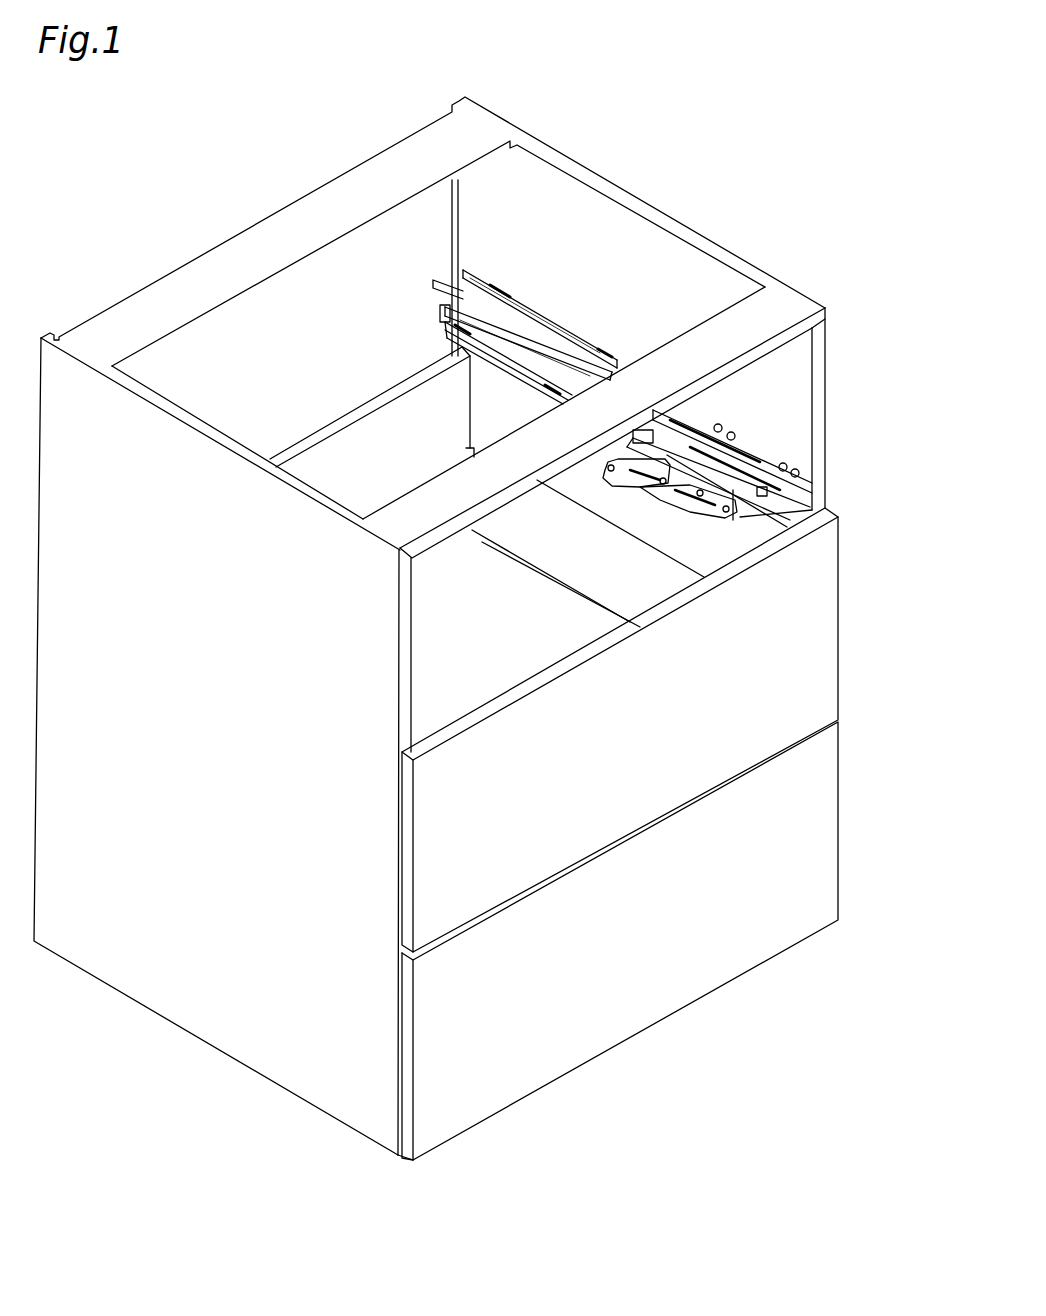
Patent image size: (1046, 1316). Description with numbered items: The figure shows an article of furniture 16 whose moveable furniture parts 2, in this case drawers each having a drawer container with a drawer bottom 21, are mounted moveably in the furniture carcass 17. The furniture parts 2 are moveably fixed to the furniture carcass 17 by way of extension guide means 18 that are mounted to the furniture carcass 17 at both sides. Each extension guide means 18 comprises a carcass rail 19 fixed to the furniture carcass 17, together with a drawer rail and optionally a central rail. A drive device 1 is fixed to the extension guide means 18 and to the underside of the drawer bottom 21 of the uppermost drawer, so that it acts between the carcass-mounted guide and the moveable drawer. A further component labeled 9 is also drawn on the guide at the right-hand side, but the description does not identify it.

The drive device 1 is at (645, 521).
The furniture parts 2 is at (854, 638).
The drawer pull-out guide rail 9 is at (685, 472).
The article of furniture 16 is at (177, 244).
The furniture carcass 17 is at (267, 1013).
The extension guide means 18 is at (614, 319).
The carcass rail 19 is at (542, 325).
The drawer bottom 21 is at (448, 688).